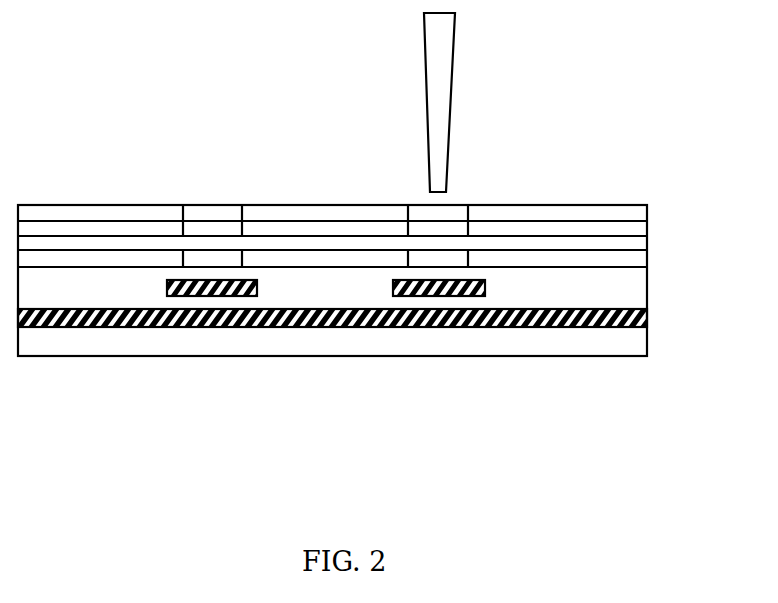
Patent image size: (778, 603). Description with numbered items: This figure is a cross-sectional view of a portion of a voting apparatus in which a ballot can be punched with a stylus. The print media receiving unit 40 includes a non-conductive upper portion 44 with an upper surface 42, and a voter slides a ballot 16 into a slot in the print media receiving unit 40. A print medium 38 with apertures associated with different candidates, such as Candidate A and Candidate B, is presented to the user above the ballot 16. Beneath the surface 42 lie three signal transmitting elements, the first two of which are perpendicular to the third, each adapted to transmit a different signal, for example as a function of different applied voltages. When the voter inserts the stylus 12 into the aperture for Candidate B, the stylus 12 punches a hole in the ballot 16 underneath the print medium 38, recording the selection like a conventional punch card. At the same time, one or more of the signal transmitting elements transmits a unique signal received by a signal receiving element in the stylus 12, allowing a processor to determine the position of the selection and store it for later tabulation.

The stylus 12 is at (452, 104).
The ballot 16 is at (648, 247).
The print medium 38 is at (648, 213).
The print media receiving unit 40 is at (648, 309).
The upper surface 42 is at (576, 220).
The upper portion 44 is at (648, 229).